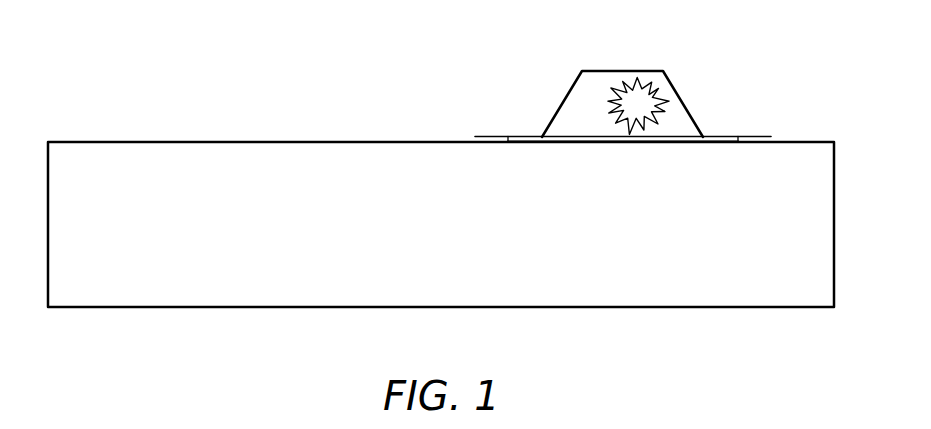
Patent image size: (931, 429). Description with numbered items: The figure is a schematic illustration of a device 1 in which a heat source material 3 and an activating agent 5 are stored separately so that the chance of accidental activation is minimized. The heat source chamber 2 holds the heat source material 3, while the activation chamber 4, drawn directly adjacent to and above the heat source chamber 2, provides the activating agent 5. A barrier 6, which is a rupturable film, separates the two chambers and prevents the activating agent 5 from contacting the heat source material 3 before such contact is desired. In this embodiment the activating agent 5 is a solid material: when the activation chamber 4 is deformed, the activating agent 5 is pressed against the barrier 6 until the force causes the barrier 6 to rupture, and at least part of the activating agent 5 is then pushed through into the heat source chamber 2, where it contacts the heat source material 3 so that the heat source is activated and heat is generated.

The device 1 is at (98, 88).
The heat source chamber 2 is at (820, 309).
The heat source material 3 is at (441, 263).
The activation chamber 4 is at (684, 96).
The activating agent 5 is at (633, 100).
The barrier 6 is at (570, 138).